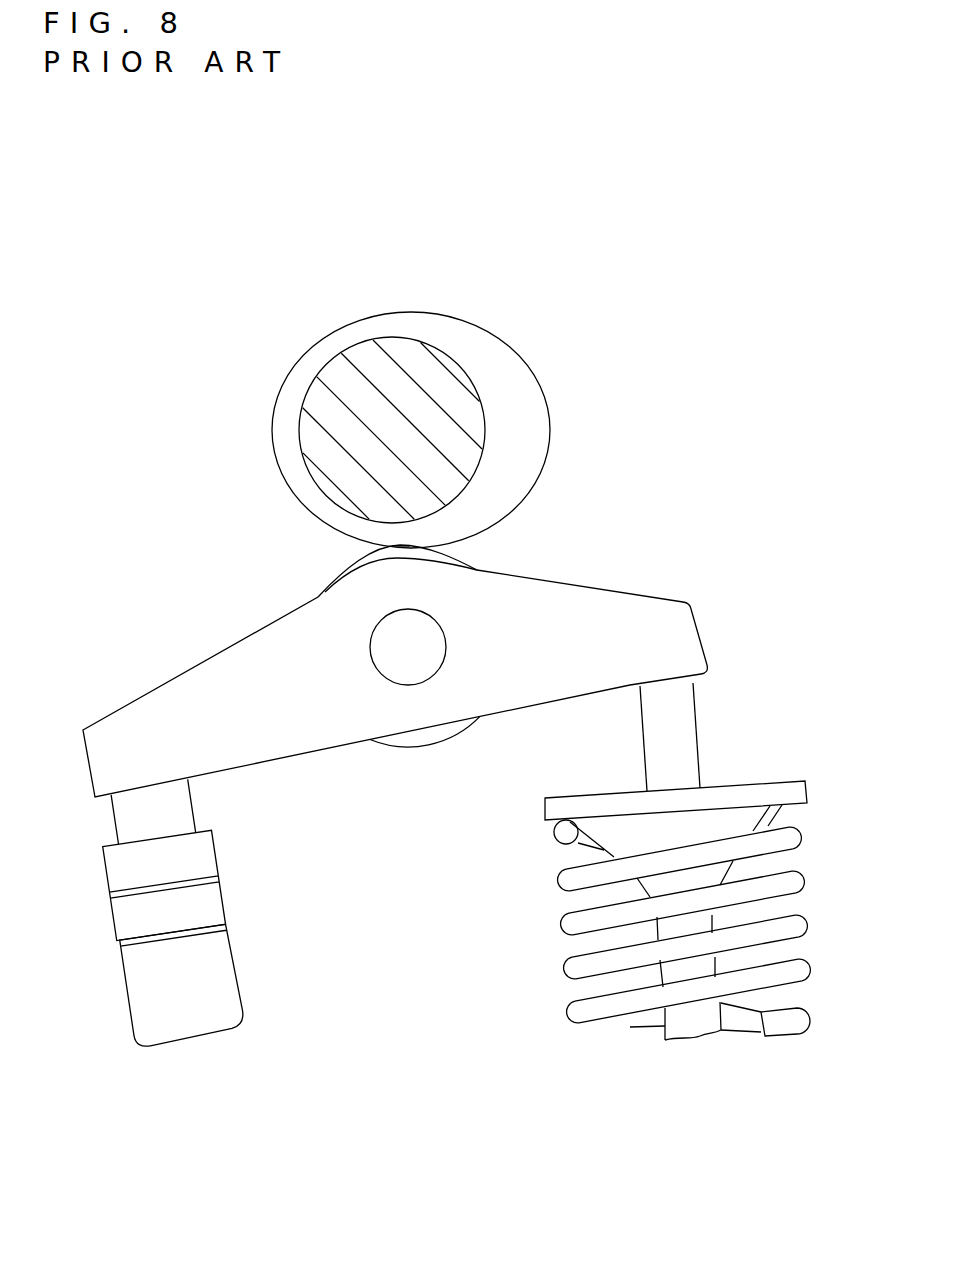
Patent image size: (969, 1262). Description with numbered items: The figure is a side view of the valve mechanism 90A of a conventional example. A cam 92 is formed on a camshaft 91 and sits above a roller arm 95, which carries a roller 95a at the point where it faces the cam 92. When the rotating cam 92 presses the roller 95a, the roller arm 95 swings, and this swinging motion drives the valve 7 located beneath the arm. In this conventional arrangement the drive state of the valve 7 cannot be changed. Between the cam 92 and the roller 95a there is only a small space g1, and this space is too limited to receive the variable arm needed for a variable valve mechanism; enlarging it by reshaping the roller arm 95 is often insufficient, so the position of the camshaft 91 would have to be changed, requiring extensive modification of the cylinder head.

The valve mechanism 90A is at (700, 243).
The camshaft 91 is at (317, 397).
The cam 92 is at (535, 395).
The roller arm 95 is at (647, 617).
The roller 95a is at (353, 570).
The space g1 is at (340, 553).
The valve 7 is at (683, 728).